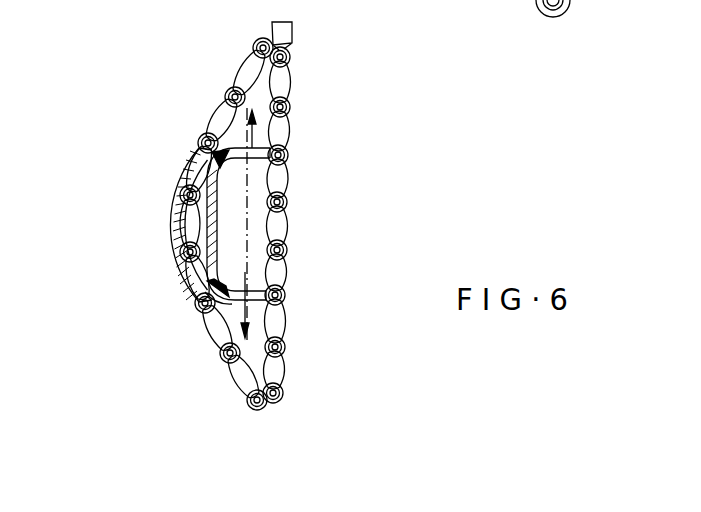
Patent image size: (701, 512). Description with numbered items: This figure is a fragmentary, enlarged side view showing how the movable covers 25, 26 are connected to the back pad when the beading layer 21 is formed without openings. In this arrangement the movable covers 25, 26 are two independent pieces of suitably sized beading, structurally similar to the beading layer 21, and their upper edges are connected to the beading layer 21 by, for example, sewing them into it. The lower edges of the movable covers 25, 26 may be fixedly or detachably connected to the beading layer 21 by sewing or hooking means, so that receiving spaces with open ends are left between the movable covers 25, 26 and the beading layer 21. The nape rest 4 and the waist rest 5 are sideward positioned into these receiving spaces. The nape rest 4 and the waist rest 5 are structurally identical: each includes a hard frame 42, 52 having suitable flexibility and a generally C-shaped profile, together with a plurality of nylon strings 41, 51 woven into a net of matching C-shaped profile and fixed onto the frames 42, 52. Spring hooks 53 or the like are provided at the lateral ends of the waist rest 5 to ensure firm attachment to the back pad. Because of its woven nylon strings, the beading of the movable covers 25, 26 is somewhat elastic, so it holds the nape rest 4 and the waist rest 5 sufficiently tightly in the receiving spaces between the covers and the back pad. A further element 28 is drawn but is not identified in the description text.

The nape rest 4 is at (260, 274).
The waist rest 5 is at (226, 224).
The beading layer 21 is at (300, 167).
The movable cover 25 is at (200, 222).
The movable cover 26 is at (191, 225).
The chain end connector 28 is at (292, 37).
The nylon strings 41 is at (192, 222).
The nylon strings 51 is at (238, 224).
The hard frame 42 is at (233, 293).
The hard frame 52 is at (218, 291).
The spring hooks 53 is at (598, 0).